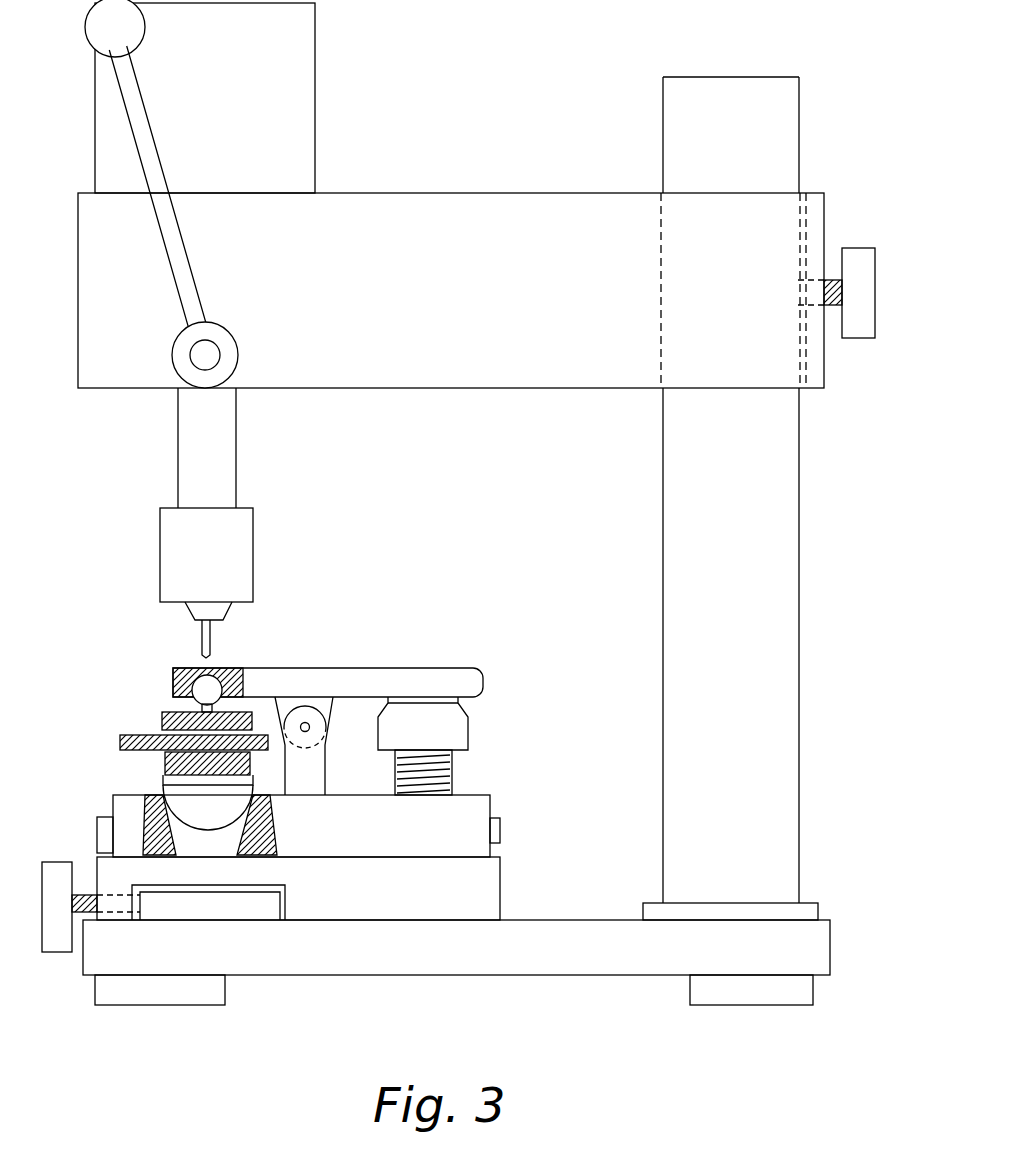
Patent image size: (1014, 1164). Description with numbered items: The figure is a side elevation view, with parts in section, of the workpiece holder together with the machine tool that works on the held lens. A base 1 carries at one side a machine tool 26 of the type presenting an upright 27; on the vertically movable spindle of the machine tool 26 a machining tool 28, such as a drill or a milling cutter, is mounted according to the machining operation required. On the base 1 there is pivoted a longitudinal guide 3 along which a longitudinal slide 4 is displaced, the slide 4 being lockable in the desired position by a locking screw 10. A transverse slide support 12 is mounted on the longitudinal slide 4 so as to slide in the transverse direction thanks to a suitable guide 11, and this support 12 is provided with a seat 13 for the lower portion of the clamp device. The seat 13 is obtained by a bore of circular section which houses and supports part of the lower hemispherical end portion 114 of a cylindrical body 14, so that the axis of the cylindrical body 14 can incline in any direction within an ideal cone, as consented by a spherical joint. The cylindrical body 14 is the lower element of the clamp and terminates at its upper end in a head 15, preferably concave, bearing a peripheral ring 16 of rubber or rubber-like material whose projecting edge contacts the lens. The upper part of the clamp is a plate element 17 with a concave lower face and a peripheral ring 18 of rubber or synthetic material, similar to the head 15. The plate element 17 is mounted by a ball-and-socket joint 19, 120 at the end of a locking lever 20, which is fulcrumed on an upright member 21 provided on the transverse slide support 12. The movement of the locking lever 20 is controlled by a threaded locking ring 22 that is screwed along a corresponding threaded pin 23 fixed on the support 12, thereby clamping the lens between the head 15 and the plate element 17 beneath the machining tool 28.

The base 1 is at (583, 1000).
The longitudinal guide 3 is at (277, 990).
The longitudinal slide 4 is at (535, 888).
The locking screw 10 is at (52, 985).
The guide 11 is at (535, 830).
The transverse slide support 12 is at (530, 790).
The seat 13 is at (175, 943).
The cylindrical body 14 is at (165, 782).
The head 15 is at (163, 768).
The peripheral ring 16 is at (308, 823).
The plate element 17 is at (255, 707).
The peripheral ring 18 is at (163, 717).
The ball-and-socket joint 19 is at (176, 676).
The locking lever 20 is at (458, 668).
The upright member 21 is at (308, 722).
The threaded locking ring 22 is at (500, 728).
The threaded pin 23 is at (485, 768).
The machine tool 26 is at (330, 57).
The upright 27 is at (682, 427).
The machining tool 28 is at (210, 635).
The lower hemispherical end portion 114 is at (305, 883).
The ball-and-socket joint 120 is at (197, 672).